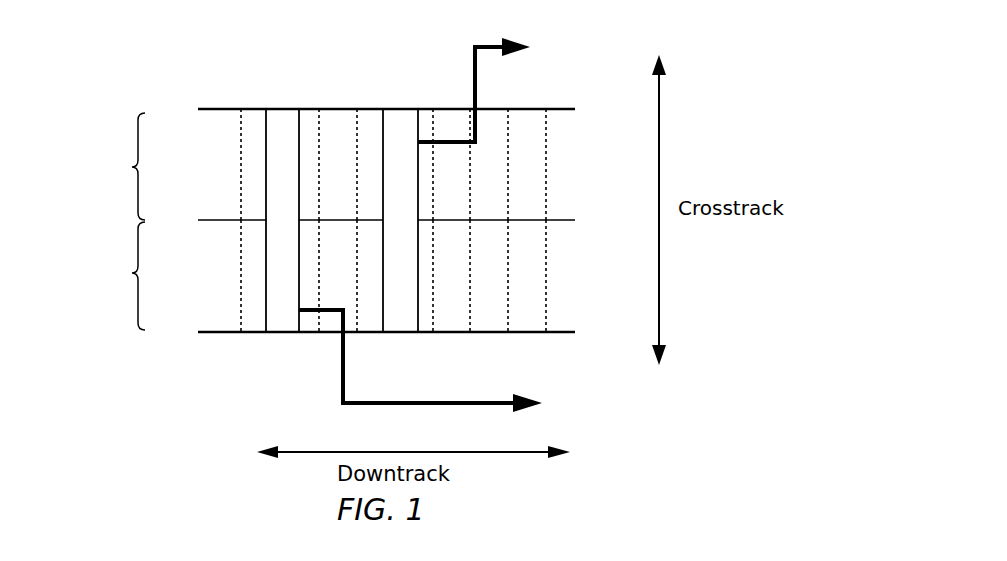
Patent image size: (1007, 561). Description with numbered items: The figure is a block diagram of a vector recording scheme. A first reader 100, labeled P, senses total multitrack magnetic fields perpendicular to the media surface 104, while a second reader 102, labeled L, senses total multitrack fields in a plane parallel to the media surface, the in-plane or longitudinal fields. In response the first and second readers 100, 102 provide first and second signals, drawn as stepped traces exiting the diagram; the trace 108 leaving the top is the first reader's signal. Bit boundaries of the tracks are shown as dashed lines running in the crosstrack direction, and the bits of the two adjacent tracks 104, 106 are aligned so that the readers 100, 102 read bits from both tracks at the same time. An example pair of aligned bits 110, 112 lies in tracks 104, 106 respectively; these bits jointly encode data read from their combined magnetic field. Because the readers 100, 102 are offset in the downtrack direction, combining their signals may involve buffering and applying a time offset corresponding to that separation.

The first reader 100 is at (279, 108).
The second reader 102 is at (405, 108).
The media surface 104 is at (132, 167).
The track 106 is at (132, 273).
The first readback signal path r1n 108 is at (477, 95).
The bit 110 is at (525, 163).
The bit 112 is at (525, 272).